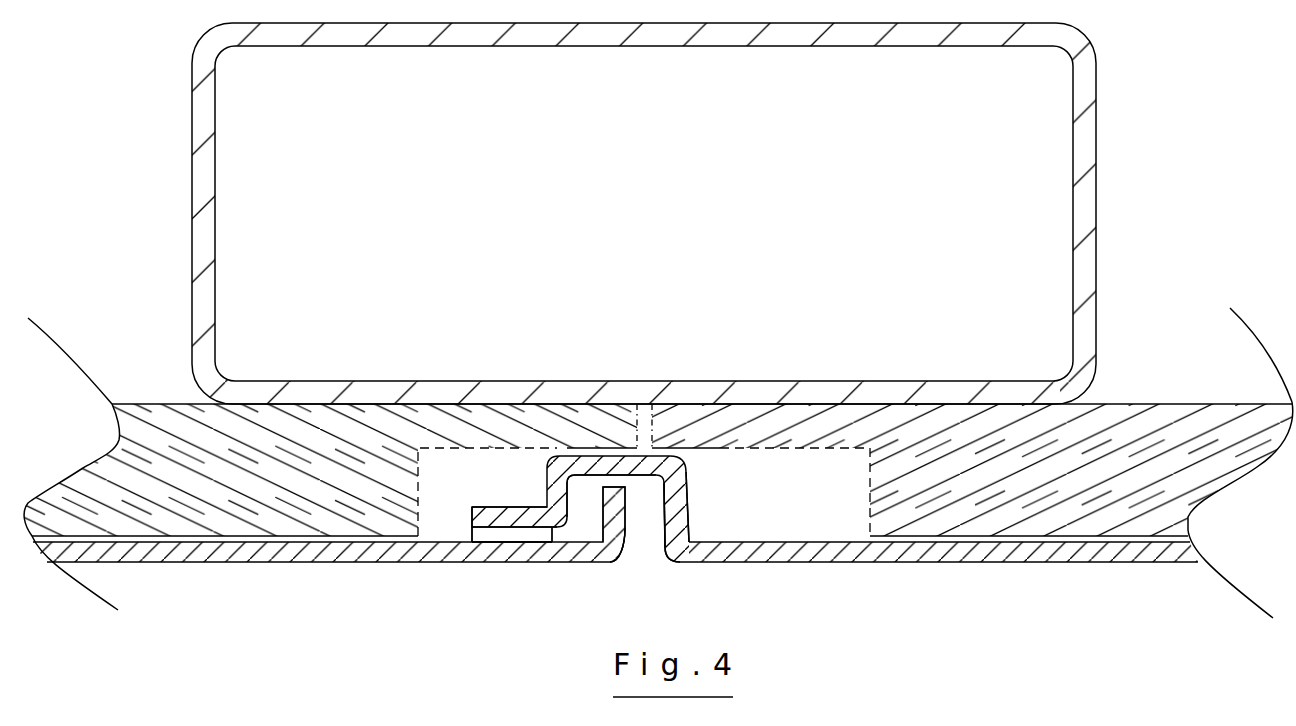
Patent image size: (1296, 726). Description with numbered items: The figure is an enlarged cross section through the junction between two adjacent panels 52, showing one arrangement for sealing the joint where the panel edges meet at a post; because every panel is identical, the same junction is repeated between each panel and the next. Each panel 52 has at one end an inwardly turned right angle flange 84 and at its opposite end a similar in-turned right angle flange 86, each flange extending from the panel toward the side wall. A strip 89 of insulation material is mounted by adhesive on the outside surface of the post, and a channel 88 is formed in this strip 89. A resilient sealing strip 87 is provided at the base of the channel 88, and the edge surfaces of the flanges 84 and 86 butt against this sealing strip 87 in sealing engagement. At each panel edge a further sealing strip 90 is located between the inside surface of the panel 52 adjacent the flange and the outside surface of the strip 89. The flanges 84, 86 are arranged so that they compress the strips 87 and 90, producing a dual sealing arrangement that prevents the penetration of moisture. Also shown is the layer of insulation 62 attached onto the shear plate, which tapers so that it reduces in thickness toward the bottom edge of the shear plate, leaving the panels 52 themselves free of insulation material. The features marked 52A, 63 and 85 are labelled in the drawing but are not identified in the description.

The panel 52 is at (340, 558).
The panel recess 52A is at (513, 545).
The layer of insulation 62 is at (878, 432).
The cavity 63 is at (870, 480).
The inwardly turned right angle flange 84 is at (630, 527).
The slot 85 is at (653, 533).
The in-turned right angle flange 86 is at (677, 513).
The resilient sealing strip 87 is at (593, 476).
The channel 88 is at (548, 497).
The strip of insulation material 89 is at (488, 510).
The further sealing strip 90 is at (482, 538).